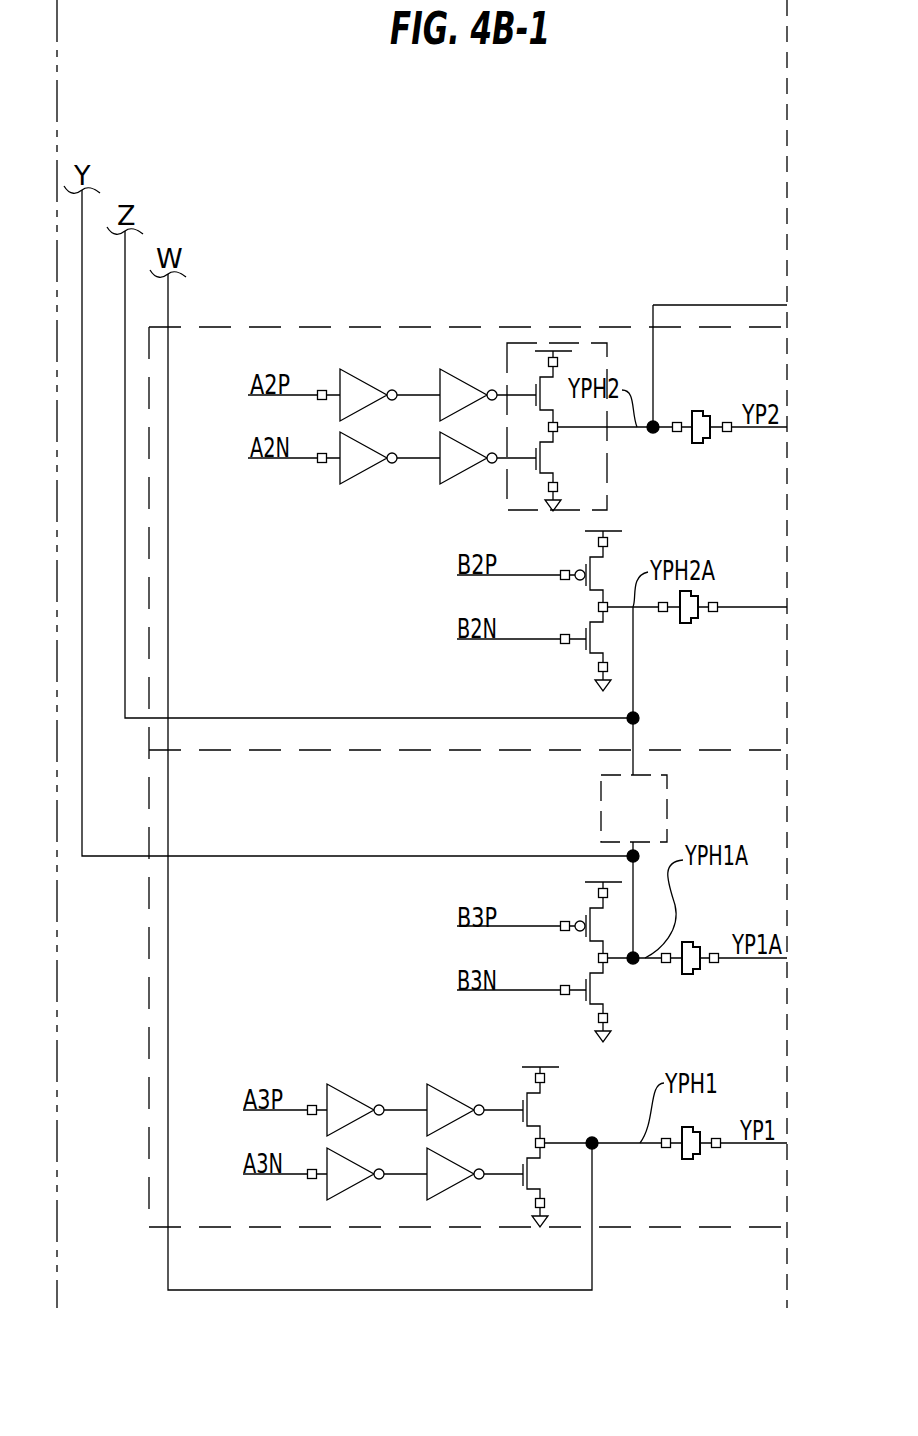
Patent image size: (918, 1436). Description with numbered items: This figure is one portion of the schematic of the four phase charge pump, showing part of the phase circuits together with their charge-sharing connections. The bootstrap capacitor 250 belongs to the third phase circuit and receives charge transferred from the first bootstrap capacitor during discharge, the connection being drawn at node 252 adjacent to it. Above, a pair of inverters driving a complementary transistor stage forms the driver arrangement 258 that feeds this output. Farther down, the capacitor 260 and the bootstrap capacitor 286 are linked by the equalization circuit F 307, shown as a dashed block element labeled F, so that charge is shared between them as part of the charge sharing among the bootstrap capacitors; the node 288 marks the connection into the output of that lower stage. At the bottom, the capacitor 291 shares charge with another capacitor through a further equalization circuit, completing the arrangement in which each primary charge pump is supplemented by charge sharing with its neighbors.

The bootstrap capacitor 250 is at (700, 411).
The connection node to buffer 250 252 is at (677, 432).
The inverter transistor pair (A2P/A2N stage) 258 is at (507, 500).
The capacitor 260 is at (688, 623).
The bootstrap capacitor 286 is at (688, 943).
The connection node to buffer 286 288 is at (667, 963).
The capacitor 291 is at (690, 1159).
The equalization circuit F 307 is at (601, 795).